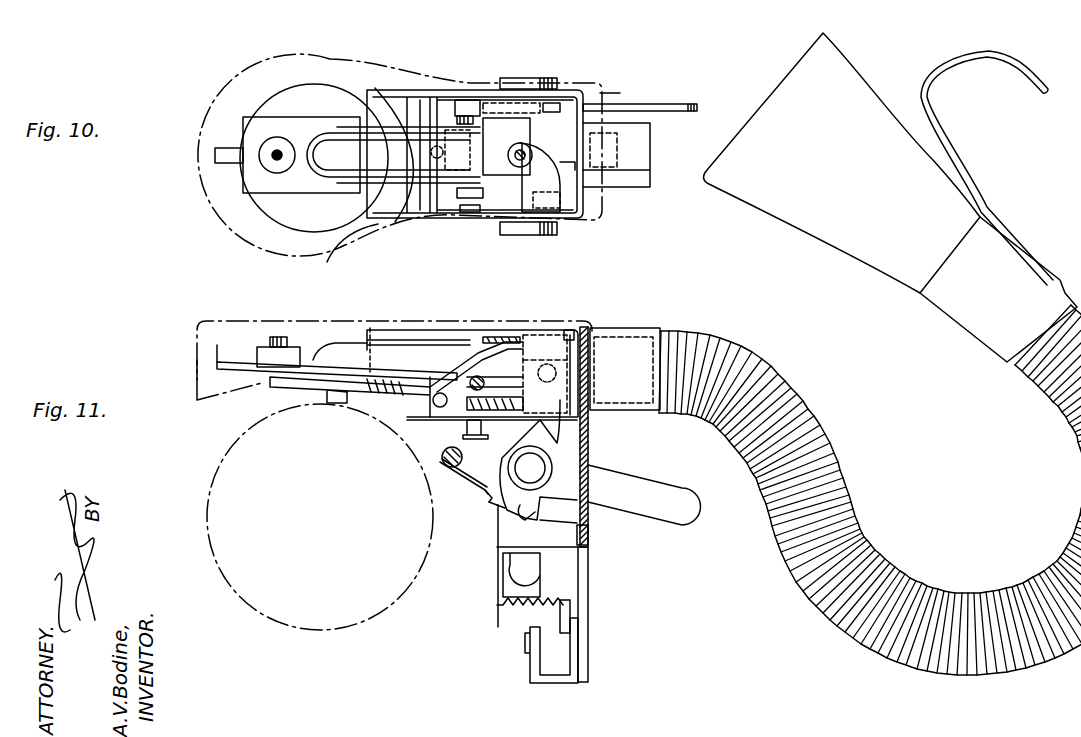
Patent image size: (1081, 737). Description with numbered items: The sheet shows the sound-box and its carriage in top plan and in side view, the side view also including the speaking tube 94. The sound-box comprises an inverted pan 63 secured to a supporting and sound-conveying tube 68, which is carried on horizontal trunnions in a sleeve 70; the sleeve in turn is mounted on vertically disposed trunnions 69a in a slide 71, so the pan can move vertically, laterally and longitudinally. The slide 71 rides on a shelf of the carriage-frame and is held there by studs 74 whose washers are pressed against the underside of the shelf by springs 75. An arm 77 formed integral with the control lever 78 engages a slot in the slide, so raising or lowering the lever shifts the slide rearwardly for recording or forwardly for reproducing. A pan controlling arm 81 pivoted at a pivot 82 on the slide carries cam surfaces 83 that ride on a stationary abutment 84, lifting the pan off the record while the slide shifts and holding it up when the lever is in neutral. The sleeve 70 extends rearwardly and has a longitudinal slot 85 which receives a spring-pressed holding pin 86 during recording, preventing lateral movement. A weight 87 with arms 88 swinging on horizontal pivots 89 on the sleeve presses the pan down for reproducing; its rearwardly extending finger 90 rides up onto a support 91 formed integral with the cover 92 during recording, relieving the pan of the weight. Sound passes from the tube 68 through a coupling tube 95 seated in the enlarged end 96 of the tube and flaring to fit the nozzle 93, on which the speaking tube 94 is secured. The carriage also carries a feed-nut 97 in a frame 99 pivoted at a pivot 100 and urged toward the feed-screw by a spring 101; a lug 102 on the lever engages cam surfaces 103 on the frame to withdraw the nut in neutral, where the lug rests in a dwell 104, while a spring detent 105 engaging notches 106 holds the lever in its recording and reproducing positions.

In FIG. 10, the inverted pan 63 is at (302, 92).
In FIG. 11, the inverted pan 63 is at (262, 383).
In FIG. 10, the supporting and sound-conveying tube 68 is at (393, 155).
In FIG. 10, the vertically disposed trunnions 69a is at (522, 152).
In FIG. 10, the sleeve 70 is at (522, 125).
In FIG. 11, the slide 71 is at (592, 338).
In FIG. 11, the studs 74 is at (442, 455).
In FIG. 11, the springs 75 is at (462, 432).
In FIG. 10, the arm 77 is at (526, 150).
In FIG. 11, the arm 77 is at (548, 440).
In FIG. 10, the lever 78 is at (690, 104).
In FIG. 11, the lever 78 is at (630, 485).
In FIG. 11, the pan controlling arm 81 is at (515, 360).
In FIG. 11, the pivot 82 is at (568, 330).
In FIG. 11, the cam surfaces 83 is at (477, 376).
In FIG. 11, the stationary abutment 84 is at (470, 360).
In FIG. 10, the longitudinal slot 85 is at (462, 100).
In FIG. 10, the spring-pressed holding pin 86 is at (425, 88).
In FIG. 11, the spring-pressed holding pin 86 is at (430, 405).
In FIG. 10, the weight 87 is at (300, 195).
In FIG. 11, the weight 87 is at (262, 347).
In FIG. 10, the arms 88 is at (372, 90).
In FIG. 11, the arms 88 is at (378, 343).
In FIG. 10, the horizontal pivots 89 is at (466, 116).
In FIG. 10, the rearwardly extending finger 90 is at (225, 148).
In FIG. 11, the rearwardly extending finger 90 is at (215, 345).
In FIG. 11, the support 91 is at (197, 368).
In FIG. 10, the cover 92 is at (258, 62).
In FIG. 11, the cover 92 is at (275, 321).
In FIG. 10, the nozzle 93 is at (650, 160).
In FIG. 11, the speaking tube 94 is at (735, 348).
In FIG. 10, the coupling tube 95 is at (572, 168).
In FIG. 10, the enlarged end 96 is at (510, 103).
In FIG. 11, the feed-nut 97 is at (503, 585).
In FIG. 11, the frame 99 is at (496, 546).
In FIG. 11, the pivot 100 is at (440, 468).
In FIG. 11, the spring 101 is at (520, 607).
In FIG. 11, the lug or arm 102 is at (492, 500).
In FIG. 11, the cam surfaces 103 is at (488, 494).
In FIG. 11, the dwell 104 is at (495, 505).
In FIG. 11, the spring detent 105 is at (588, 537).
In FIG. 11, the dwells or notches 106 is at (525, 520).